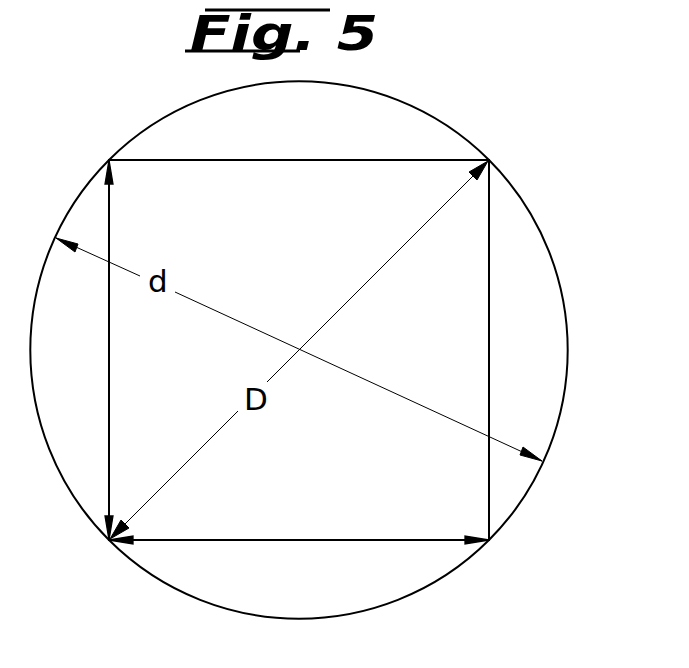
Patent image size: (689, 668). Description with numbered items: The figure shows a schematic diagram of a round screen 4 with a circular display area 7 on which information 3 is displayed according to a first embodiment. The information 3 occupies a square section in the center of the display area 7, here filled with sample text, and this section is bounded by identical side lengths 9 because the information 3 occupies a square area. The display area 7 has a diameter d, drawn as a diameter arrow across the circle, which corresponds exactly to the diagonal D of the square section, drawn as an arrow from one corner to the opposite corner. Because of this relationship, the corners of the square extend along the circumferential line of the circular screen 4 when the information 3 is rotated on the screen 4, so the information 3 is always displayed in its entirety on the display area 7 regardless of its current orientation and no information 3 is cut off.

The information 3 is at (407, 185).
The screen 4 is at (561, 278).
The display area 7 is at (528, 337).
The side length 9 is at (108, 284).